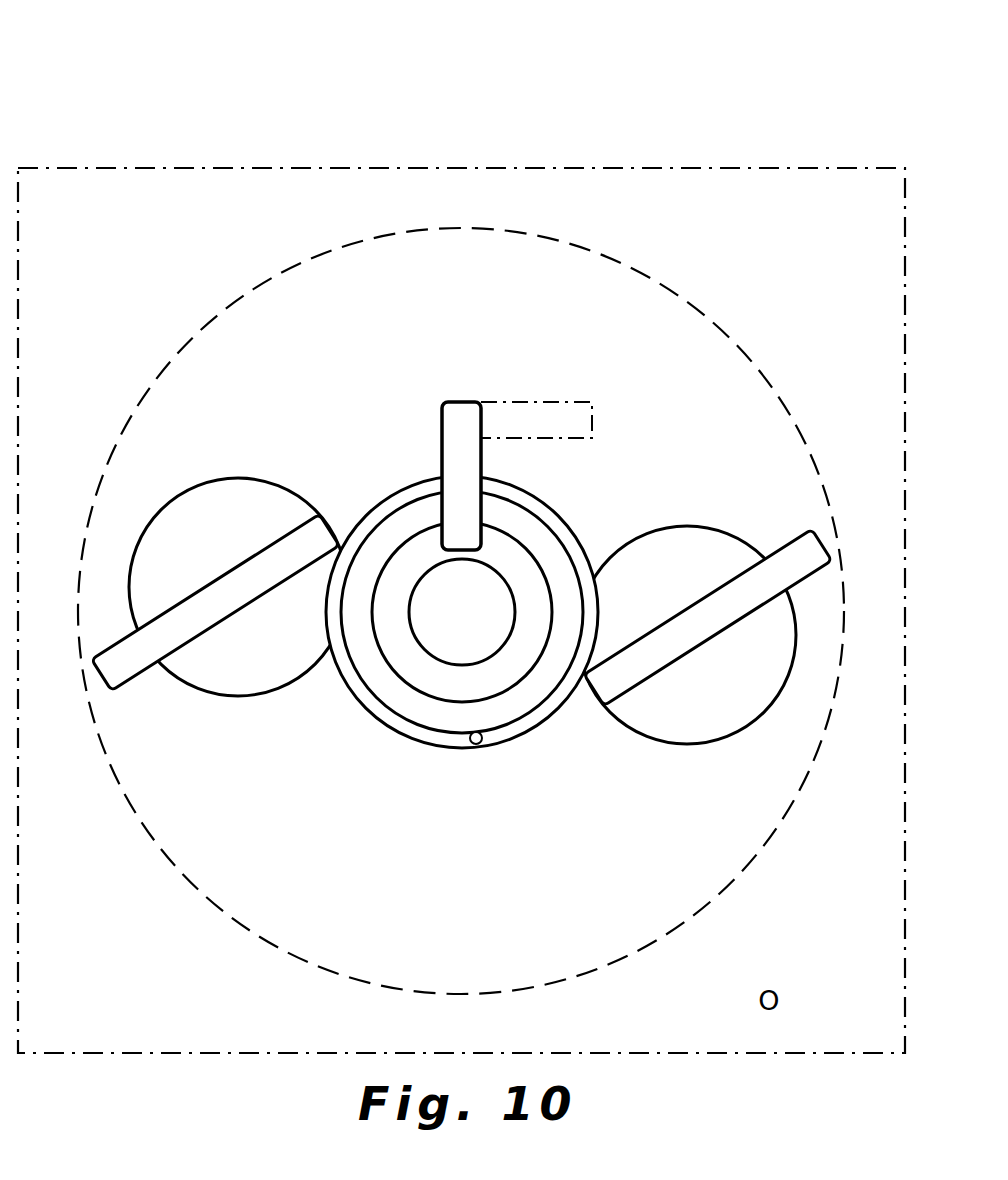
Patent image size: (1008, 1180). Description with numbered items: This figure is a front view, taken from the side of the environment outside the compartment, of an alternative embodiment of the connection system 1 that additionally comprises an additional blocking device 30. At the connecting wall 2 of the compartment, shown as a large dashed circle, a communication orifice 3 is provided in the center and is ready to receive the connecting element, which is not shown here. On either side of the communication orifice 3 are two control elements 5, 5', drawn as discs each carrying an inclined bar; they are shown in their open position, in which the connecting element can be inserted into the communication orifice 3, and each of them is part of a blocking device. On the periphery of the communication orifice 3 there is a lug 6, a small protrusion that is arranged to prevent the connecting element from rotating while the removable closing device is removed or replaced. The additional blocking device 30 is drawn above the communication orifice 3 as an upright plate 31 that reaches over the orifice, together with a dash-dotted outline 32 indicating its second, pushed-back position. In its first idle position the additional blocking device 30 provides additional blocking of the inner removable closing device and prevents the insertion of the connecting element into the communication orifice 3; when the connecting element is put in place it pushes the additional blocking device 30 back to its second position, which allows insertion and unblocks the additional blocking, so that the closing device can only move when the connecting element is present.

The connection system 1 is at (159, 132).
The connecting wall 2 is at (417, 283).
The communication orifice 3 is at (455, 612).
The control element 5 is at (705, 594).
The control element 5' is at (219, 544).
The lug 6 is at (478, 747).
The tool 30 is at (504, 439).
The tool plate 31 is at (457, 497).
The tool extension (phantom) 32 is at (560, 427).